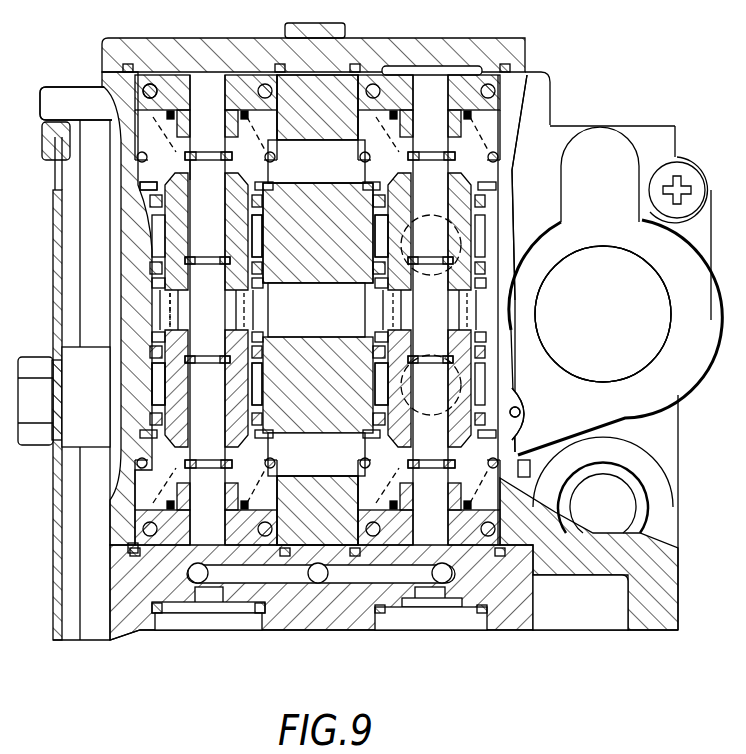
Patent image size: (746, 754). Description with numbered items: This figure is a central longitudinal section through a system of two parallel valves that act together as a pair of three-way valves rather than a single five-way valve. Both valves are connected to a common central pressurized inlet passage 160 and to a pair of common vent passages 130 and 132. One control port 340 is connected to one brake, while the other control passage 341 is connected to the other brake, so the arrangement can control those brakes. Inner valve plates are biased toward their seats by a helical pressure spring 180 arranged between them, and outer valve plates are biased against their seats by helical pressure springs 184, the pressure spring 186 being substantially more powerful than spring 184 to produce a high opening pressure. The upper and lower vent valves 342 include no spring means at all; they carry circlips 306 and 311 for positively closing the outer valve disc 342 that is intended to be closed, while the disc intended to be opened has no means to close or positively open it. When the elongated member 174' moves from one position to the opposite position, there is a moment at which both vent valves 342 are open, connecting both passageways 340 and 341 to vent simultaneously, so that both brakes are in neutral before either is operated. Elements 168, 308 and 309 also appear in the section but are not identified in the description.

The bearing 168 is at (167, 80).
The pressure spring 186 is at (178, 115).
The elongated member 174' is at (100, 179).
The vent valve 342 is at (147, 195).
The helical pressure spring 184 is at (110, 463).
The helical pressure spring 180 is at (183, 317).
The control port 340 is at (375, 233).
The control passage 341 is at (377, 387).
The vent passage 132 is at (330, 169).
The central pressurized inlet passage 160 is at (348, 324).
The vent passage 130 is at (340, 467).
The circlip 306 is at (470, 158).
The pivot boss 308 is at (485, 262).
The bore 309 is at (484, 350).
The circlip 311 is at (500, 458).